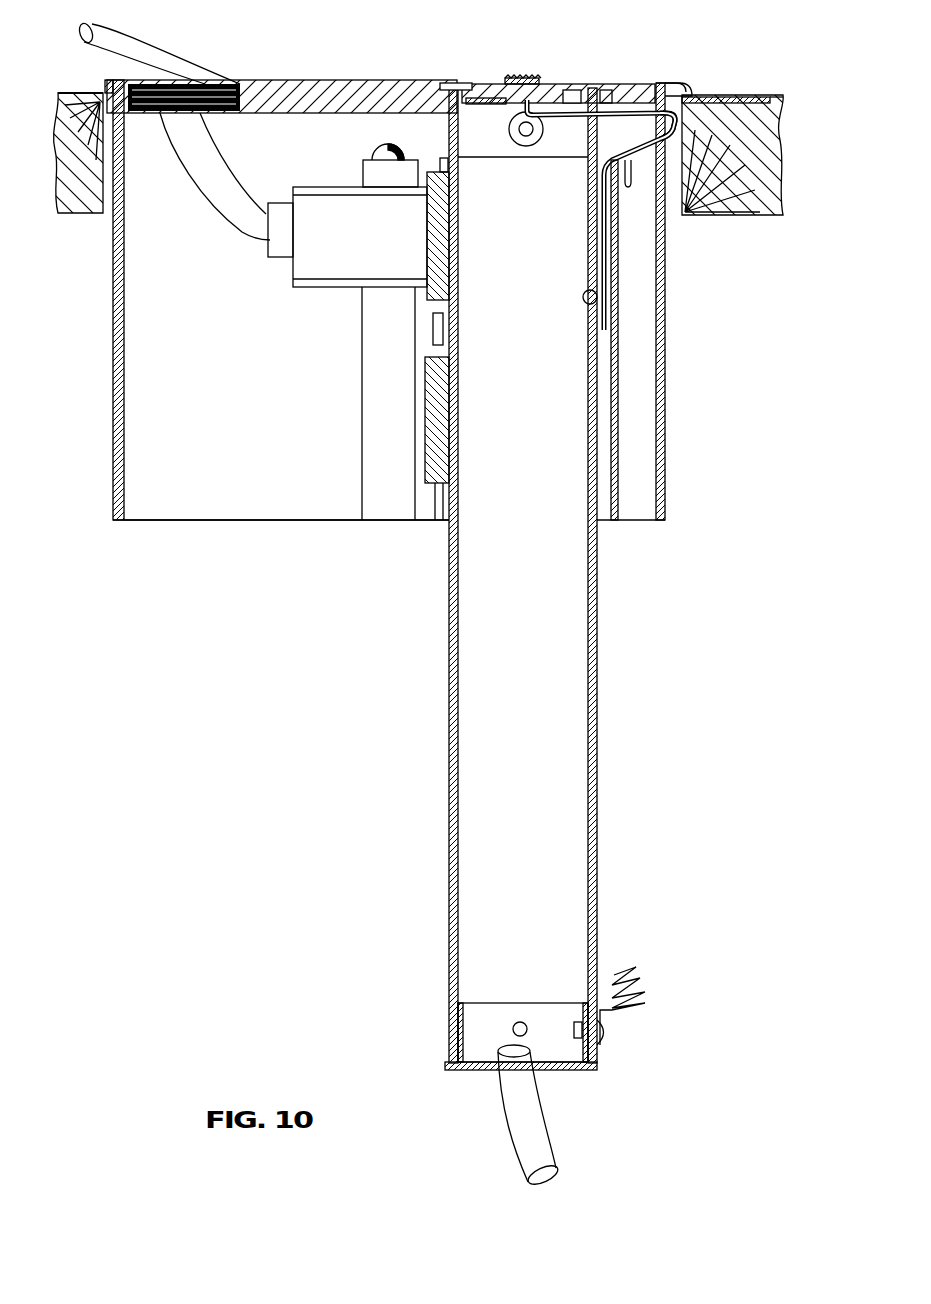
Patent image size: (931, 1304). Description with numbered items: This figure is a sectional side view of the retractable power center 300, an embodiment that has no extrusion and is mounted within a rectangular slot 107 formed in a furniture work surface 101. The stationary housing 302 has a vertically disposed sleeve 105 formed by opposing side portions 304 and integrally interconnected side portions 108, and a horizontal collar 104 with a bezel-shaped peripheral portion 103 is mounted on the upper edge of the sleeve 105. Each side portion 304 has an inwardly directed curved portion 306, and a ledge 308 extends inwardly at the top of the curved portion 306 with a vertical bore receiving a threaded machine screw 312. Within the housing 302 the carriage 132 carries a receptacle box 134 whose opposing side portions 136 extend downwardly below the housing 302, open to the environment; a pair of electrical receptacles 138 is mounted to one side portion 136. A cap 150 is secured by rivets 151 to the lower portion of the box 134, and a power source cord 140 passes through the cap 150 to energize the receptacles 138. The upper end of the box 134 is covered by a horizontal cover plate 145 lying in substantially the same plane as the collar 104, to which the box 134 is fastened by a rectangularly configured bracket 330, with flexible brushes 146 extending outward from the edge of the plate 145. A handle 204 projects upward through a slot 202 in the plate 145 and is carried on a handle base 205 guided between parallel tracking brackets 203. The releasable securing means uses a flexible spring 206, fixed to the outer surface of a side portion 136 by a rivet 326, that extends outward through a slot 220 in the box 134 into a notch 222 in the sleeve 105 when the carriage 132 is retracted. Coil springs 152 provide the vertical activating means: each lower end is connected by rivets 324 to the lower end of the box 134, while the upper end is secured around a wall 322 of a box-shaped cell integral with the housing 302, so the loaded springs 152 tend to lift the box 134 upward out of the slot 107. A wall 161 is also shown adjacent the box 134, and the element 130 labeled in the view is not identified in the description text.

The power center 300 is at (688, 50).
The collar 104 is at (298, 80).
The flexible brushes 146 is at (214, 80).
The slot 107 is at (110, 210).
The side portions 108 is at (112, 472).
The counter mounting block 130 is at (78, 220).
The wall 161 is at (60, 215).
The flexible spring 206 is at (740, 97).
The work surface 101 is at (781, 110).
The bezel-shaped portion 103 is at (690, 90).
The side portions 136 is at (590, 412).
The slot 202 is at (497, 82).
The tracking brackets 203 is at (474, 84).
The handle 204 is at (529, 78).
The cover plate 145 is at (583, 82).
The handle base 205 is at (508, 108).
The bracket 330 is at (560, 158).
The slot 220 is at (610, 112).
The notch 222 is at (668, 122).
The wall 322 is at (616, 361).
The coil springs 152 is at (629, 178).
The rivet 326 is at (584, 300).
The curved portion 306 is at (368, 385).
The ledge 308 is at (413, 160).
The machine screw 312 is at (372, 148).
The electrical receptacles 138 is at (428, 305).
The side portions 304 is at (210, 388).
The housing 302 is at (135, 548).
The sleeve 105 is at (262, 512).
The carriage 132 is at (425, 915).
The receptacle box 134 is at (596, 1062).
The rivets 151 is at (523, 1020).
The rivets 324 is at (608, 1032).
The cap 150 is at (466, 1070).
The power source cord 140 is at (545, 1153).